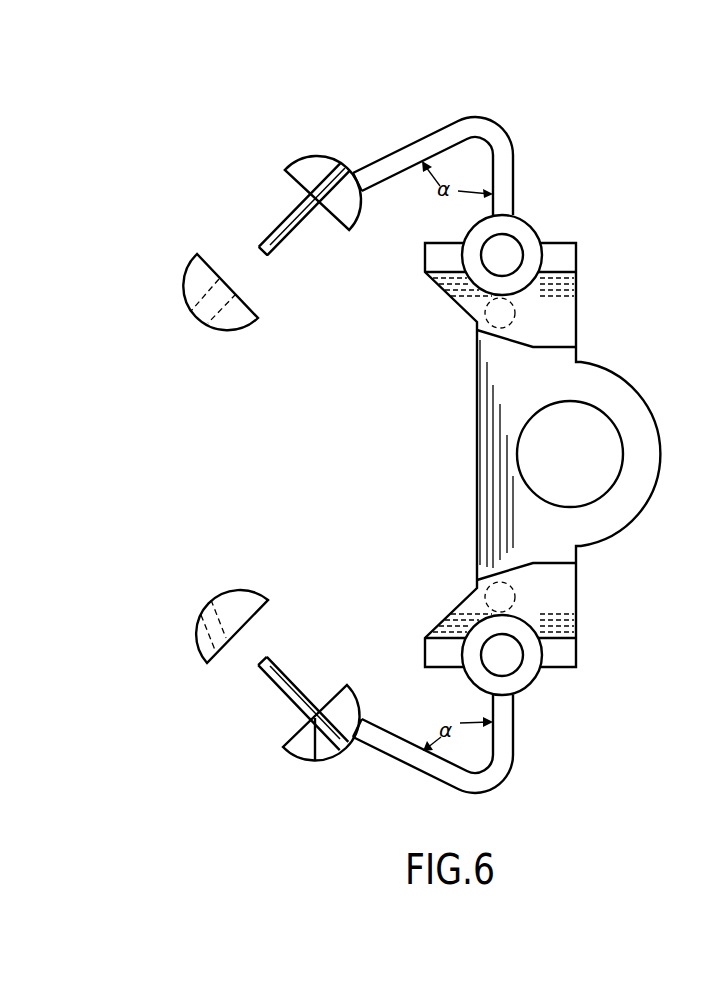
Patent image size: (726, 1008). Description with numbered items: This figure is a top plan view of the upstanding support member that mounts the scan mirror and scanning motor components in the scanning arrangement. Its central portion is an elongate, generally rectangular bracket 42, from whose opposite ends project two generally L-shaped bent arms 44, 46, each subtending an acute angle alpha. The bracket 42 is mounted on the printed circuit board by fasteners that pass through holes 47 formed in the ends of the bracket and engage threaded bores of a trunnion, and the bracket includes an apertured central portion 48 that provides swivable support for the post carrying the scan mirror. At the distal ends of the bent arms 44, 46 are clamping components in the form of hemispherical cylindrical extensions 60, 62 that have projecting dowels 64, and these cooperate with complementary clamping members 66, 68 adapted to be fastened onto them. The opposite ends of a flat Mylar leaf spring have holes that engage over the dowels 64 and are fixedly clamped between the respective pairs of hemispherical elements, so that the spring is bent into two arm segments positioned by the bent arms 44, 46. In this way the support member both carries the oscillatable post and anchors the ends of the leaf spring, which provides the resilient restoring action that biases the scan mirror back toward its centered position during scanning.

The elongate bracket 42 is at (576, 605).
The bent arm 44 is at (513, 754).
The bent arm 46 is at (493, 120).
The hole 47 is at (518, 238).
The apertured central portion 48 is at (616, 422).
The hemispherical cylindrical extension 60 is at (331, 155).
The hemispherical cylindrical extension 62 is at (313, 762).
The dowel 64 is at (277, 253).
The clamping member 66 is at (182, 286).
The clamping member 68 is at (200, 655).